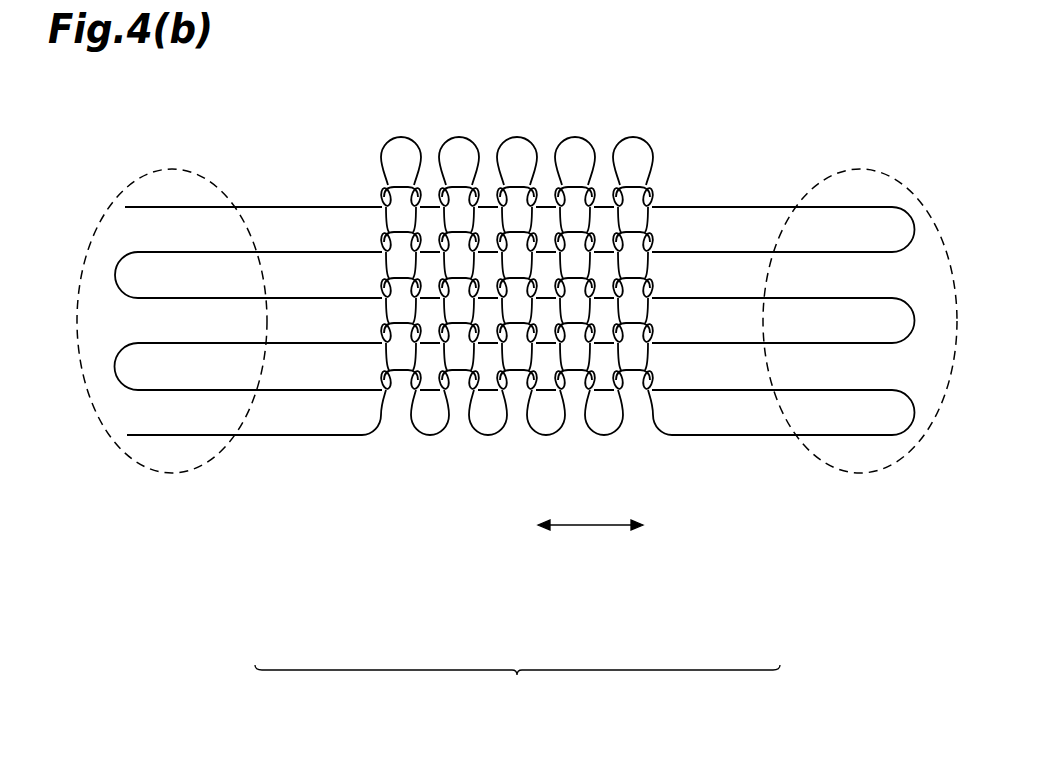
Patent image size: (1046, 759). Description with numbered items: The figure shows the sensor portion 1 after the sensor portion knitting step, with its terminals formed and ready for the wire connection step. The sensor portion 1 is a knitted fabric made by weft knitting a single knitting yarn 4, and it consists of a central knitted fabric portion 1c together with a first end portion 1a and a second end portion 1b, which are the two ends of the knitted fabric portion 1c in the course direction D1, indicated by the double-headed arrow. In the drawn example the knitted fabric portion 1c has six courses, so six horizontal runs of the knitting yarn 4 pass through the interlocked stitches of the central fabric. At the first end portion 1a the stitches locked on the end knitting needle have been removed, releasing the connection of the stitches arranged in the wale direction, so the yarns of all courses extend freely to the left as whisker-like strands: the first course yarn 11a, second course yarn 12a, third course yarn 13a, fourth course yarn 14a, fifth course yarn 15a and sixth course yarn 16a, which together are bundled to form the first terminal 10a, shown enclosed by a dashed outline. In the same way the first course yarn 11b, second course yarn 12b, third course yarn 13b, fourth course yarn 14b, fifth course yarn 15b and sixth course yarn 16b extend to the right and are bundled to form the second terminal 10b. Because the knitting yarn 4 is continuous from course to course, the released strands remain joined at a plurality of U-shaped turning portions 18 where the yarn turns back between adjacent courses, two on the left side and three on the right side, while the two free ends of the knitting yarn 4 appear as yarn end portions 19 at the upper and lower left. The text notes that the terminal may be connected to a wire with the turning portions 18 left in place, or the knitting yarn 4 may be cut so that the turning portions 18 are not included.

The sensor portion 1 is at (517, 684).
The first end portion 1a is at (285, 578).
The second end portion 1b is at (743, 578).
The knitted fabric portion 1c is at (510, 578).
The knitting yarn 4 is at (519, 140).
The first terminal 10a is at (172, 475).
The second terminal 10b is at (860, 475).
The first course yarn 11a is at (270, 437).
The first course yarn 11b is at (763, 437).
The second course yarn 12a is at (308, 392).
The second course yarn 12b is at (730, 392).
The third course yarn 13a is at (348, 345).
The third course yarn 13b is at (690, 345).
The fourth course yarn 14a is at (345, 298).
The fourth course yarn 14b is at (684, 298).
The fifth course yarn 15a is at (308, 250).
The fifth course yarn 15b is at (720, 250).
The sixth course yarn 16a is at (270, 207).
The sixth course yarn 16b is at (762, 207).
The U-shaped turning portion 18 is at (115, 275).
The yarn end portion 19 is at (167, 207).
The course direction D1 is at (590, 538).